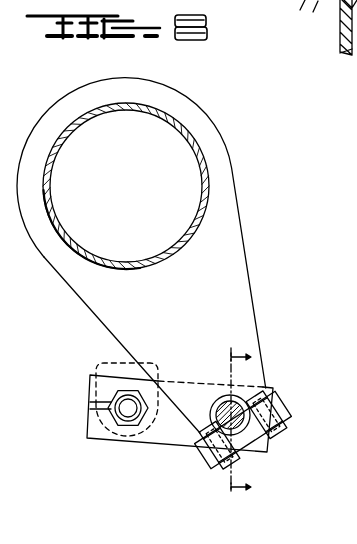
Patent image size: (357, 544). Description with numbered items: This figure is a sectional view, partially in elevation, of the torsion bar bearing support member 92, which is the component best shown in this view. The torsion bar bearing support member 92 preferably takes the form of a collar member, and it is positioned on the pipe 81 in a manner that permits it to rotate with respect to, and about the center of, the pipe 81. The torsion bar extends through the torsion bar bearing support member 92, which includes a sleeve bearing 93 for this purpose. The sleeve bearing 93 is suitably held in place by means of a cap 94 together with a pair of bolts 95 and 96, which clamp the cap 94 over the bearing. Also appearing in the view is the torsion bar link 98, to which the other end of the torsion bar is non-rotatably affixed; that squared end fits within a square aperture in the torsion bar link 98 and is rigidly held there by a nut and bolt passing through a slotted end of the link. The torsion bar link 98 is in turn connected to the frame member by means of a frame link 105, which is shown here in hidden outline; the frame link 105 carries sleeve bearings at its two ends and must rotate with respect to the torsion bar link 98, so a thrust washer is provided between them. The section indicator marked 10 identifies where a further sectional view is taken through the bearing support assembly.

The bearing ring 81 is at (182, 125).
The support arm 92 is at (232, 220).
The rod 93 is at (221, 397).
The clamp body 94 is at (238, 449).
The clamp bolt 95 is at (215, 478).
The clamp bolt 96 is at (281, 445).
The mounting plate 98 is at (168, 432).
The clip 105 is at (100, 364).
The section line 10- 10 is at (244, 425).